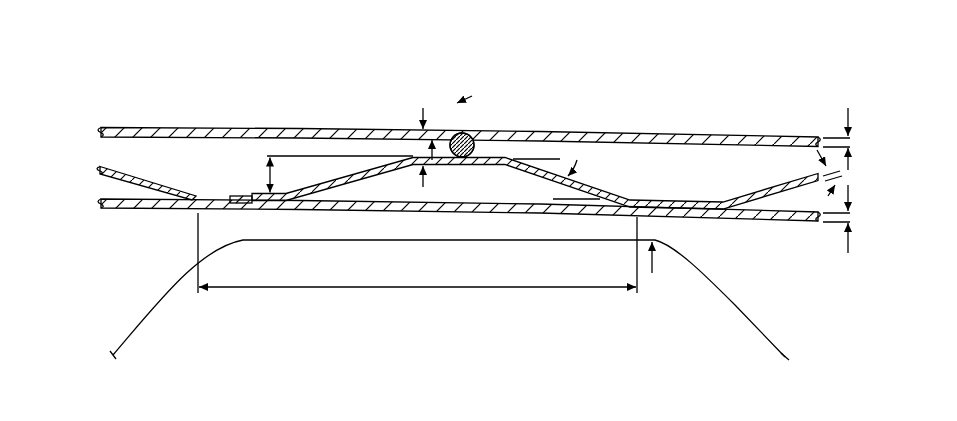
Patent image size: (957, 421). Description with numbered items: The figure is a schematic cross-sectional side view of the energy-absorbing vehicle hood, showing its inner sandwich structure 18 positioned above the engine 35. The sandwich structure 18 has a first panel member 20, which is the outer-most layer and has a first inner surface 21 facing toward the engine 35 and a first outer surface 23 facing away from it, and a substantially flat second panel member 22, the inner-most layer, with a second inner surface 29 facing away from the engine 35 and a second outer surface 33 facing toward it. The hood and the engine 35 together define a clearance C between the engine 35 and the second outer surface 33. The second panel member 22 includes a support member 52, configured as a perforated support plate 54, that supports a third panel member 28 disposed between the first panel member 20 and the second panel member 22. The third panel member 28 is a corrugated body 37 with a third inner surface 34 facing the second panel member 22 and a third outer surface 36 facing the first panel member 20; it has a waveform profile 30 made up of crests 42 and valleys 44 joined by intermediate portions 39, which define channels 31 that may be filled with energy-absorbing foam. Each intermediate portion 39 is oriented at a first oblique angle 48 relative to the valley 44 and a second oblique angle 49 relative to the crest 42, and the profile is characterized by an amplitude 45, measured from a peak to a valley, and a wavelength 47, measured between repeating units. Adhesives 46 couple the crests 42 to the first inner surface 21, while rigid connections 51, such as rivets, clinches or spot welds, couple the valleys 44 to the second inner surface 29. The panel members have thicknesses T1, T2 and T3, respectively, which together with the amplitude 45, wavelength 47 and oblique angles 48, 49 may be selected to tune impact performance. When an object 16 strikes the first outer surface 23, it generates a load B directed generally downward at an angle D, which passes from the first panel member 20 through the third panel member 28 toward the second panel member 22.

The object 16 is at (459, 127).
The sandwich structure 18 is at (83, 147).
The first panel member 20 is at (157, 137).
The first inner surface 21 is at (144, 128).
The second panel member 22 is at (147, 210).
The first outer surface 23 is at (115, 127).
The third panel member 28 is at (153, 188).
The second inner surface 29 is at (124, 198).
The waveform profile 30 is at (800, 137).
The channels 31 is at (240, 135).
The second outer surface 33 is at (131, 210).
The third inner surface 34 is at (151, 210).
The engine 35 is at (741, 305).
The third outer surface 36 is at (118, 167).
The corrugated body 37 is at (174, 210).
The intermediate portions 39 is at (171, 196).
The crests 42 is at (551, 152).
The valleys 44 is at (681, 200).
The amplitude 45 is at (287, 196).
The adhesives 46 is at (482, 158).
The wavelength 47 is at (432, 290).
The first oblique angle 48 is at (568, 218).
The second oblique angle 49 is at (536, 197).
The rigid connections 51 is at (243, 204).
The support member 52 is at (742, 219).
The support plate 54 is at (766, 220).
The load B is at (455, 103).
The clearance C is at (652, 266).
The angle D is at (434, 139).
The thickness of first panel member T1 is at (848, 108).
The thickness of second panel member T2 is at (848, 253).
The thickness of third panel member T3 is at (828, 196).